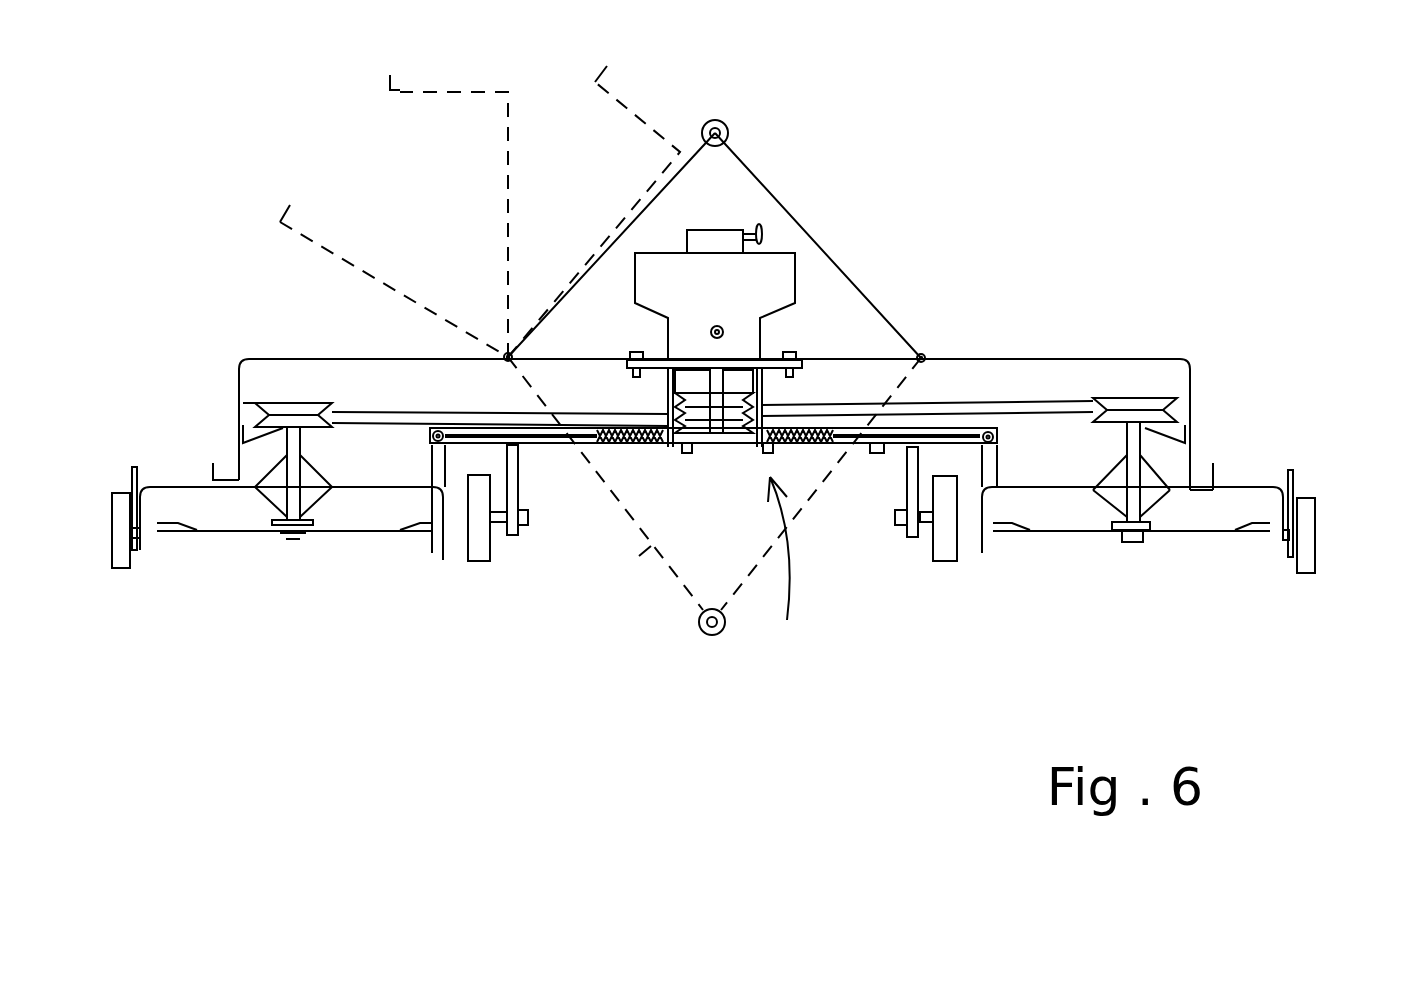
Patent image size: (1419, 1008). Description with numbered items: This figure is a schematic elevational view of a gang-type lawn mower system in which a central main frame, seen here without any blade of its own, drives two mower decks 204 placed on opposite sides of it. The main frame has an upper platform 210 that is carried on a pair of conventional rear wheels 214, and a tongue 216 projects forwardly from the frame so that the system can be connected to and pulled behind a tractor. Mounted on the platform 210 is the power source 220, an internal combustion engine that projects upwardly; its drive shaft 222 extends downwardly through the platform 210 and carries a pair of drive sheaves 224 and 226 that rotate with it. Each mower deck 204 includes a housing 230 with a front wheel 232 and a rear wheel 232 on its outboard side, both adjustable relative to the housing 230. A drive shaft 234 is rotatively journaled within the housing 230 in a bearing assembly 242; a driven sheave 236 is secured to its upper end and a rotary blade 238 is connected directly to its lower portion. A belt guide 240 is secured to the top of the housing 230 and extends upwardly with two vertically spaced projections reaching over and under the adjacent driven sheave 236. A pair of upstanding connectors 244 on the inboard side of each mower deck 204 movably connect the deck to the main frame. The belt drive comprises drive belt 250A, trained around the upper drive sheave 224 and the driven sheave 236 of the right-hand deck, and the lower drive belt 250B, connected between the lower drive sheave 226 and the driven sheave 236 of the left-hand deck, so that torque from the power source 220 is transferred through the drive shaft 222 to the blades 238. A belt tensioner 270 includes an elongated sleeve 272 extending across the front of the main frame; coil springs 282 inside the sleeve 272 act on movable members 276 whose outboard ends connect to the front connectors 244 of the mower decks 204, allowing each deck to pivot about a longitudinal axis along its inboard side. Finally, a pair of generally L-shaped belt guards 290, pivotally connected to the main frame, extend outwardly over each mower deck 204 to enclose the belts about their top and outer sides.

The mower deck 204 is at (1310, 428).
The upper platform 210 is at (580, 357).
The rear wheels 214 is at (478, 545).
The tongue 216 is at (763, 178).
The power source 220 is at (765, 280).
The drive shaft 222 is at (735, 370).
The upper drive sheave 224 is at (758, 393).
The lower drive sheave 226 is at (683, 445).
The housing 230 is at (1250, 490).
The wheels 232 is at (122, 560).
The drive shaft 234 is at (300, 495).
The driven sheave 236 is at (1112, 405).
The rotary blade 238 is at (1215, 533).
The belt guide 240 is at (265, 430).
The bearing assembly 242 is at (275, 497).
The upstanding connectors 244 is at (433, 467).
The drive belt 250A is at (997, 405).
The lower drive belt 250B is at (380, 405).
The belt tensioner 270 is at (794, 566).
The elongated sleeve 272 is at (877, 455).
The movable member 276 is at (525, 445).
The coil springs 282 is at (637, 447).
The belt guard 290 is at (647, 100).